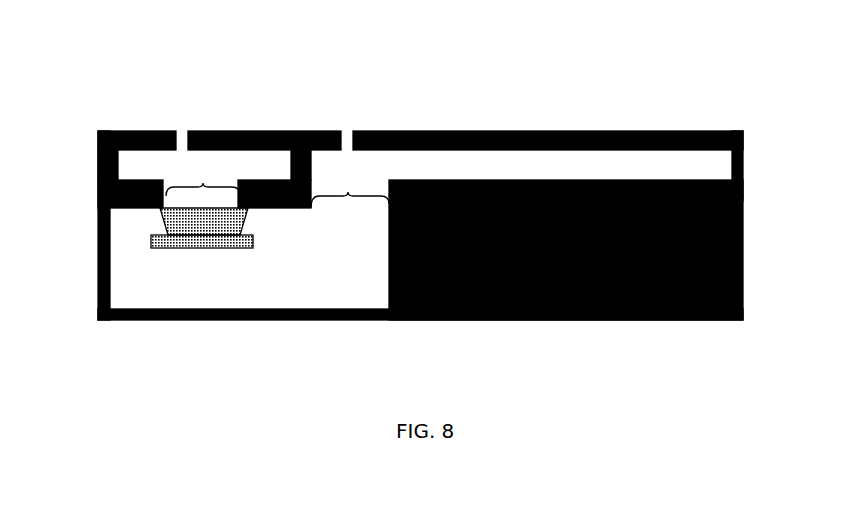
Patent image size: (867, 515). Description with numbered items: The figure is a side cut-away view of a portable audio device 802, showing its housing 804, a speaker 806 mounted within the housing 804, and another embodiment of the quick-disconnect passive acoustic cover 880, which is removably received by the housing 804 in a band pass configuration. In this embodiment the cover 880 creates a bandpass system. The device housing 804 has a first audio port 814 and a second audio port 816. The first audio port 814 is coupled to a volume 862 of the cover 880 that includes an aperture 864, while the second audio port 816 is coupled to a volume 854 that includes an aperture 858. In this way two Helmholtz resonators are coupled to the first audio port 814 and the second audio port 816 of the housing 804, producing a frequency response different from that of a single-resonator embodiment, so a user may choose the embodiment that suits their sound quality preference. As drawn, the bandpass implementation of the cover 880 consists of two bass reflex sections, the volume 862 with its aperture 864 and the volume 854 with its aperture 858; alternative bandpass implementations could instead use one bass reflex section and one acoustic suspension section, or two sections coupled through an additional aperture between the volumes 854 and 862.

The portable audio device 802 is at (789, 41).
The housing 804 is at (523, 312).
The speaker 806 is at (143, 232).
The audio port 814 is at (195, 176).
The audio port 816 is at (340, 183).
The volume 854 is at (563, 150).
The aperture 858 is at (340, 122).
The volume 862 is at (122, 150).
The aperture 864 is at (175, 127).
The quick-disconnect passive acoustic cover 880 is at (650, 120).